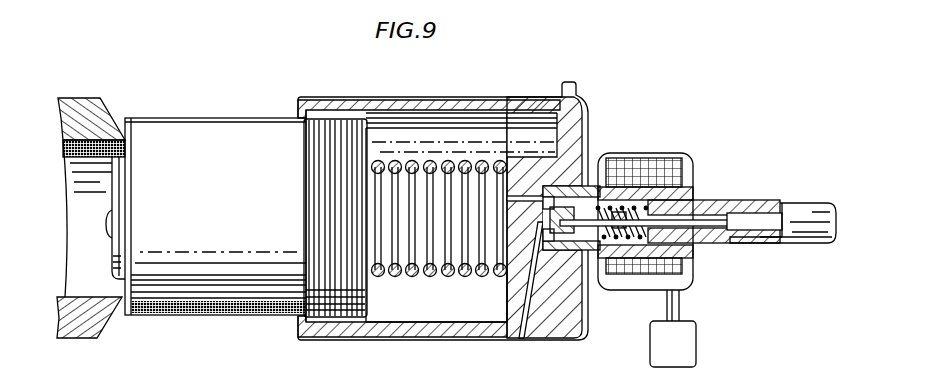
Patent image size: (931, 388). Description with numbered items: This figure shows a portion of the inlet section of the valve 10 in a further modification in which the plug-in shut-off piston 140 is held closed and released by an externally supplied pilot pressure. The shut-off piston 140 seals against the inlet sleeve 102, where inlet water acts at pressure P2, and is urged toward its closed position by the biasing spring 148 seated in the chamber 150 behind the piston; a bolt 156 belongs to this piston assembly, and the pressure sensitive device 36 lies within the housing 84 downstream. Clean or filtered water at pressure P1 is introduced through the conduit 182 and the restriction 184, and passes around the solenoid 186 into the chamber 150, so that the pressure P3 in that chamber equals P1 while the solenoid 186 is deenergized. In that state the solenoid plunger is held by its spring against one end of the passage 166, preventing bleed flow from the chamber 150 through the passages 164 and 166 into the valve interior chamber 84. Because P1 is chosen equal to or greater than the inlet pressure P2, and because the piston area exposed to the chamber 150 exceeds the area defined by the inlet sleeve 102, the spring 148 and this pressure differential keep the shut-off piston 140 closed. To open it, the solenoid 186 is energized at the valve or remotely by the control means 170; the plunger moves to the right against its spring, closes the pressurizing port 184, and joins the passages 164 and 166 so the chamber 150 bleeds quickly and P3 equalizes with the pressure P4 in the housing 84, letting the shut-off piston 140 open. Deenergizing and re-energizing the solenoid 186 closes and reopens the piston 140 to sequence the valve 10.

The valve 10 is at (647, 58).
The pressure sensitive device 36 is at (207, 117).
The housing 84 is at (443, 211).
The inlet sleeve 102 is at (83, 97).
The shut-off piston 140 is at (251, 221).
The biasing spring 148 is at (432, 167).
The chamber 150 is at (408, 300).
The bolt 156 is at (107, 216).
The bleed passage 164 is at (512, 197).
The bleed passage 166 is at (527, 294).
The control means 170 is at (688, 355).
The conduit 182 is at (806, 189).
The restriction 184 is at (707, 206).
The solenoid 186 is at (591, 263).
The supply water pressure P1 is at (842, 213).
The inlet pressure P2 is at (90, 232).
The chamber pressure P3 is at (431, 312).
The housing chamber pressure P4 is at (520, 343).